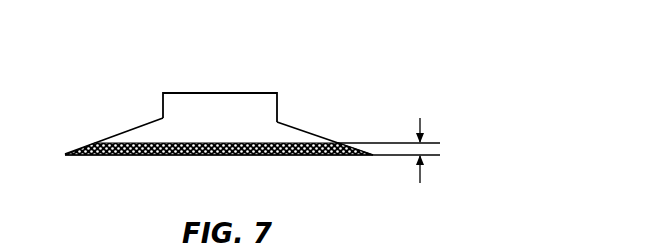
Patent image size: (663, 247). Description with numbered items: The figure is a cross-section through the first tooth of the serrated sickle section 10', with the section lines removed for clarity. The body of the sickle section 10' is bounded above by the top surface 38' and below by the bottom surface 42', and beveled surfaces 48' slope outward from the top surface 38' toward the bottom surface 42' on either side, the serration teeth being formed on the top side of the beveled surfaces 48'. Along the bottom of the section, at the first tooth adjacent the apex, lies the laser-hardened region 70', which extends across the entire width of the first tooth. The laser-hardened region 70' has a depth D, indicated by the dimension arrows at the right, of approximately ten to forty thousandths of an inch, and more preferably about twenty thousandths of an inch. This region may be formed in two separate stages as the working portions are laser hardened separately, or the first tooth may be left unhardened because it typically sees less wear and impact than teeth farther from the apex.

The sickle section 10' is at (222, 124).
The top surface 38' is at (220, 88).
The beveled surfaces 48' is at (219, 122).
The bottom surface 42' is at (252, 167).
The laser-hardened region 70' is at (219, 168).
The depth D is at (420, 118).